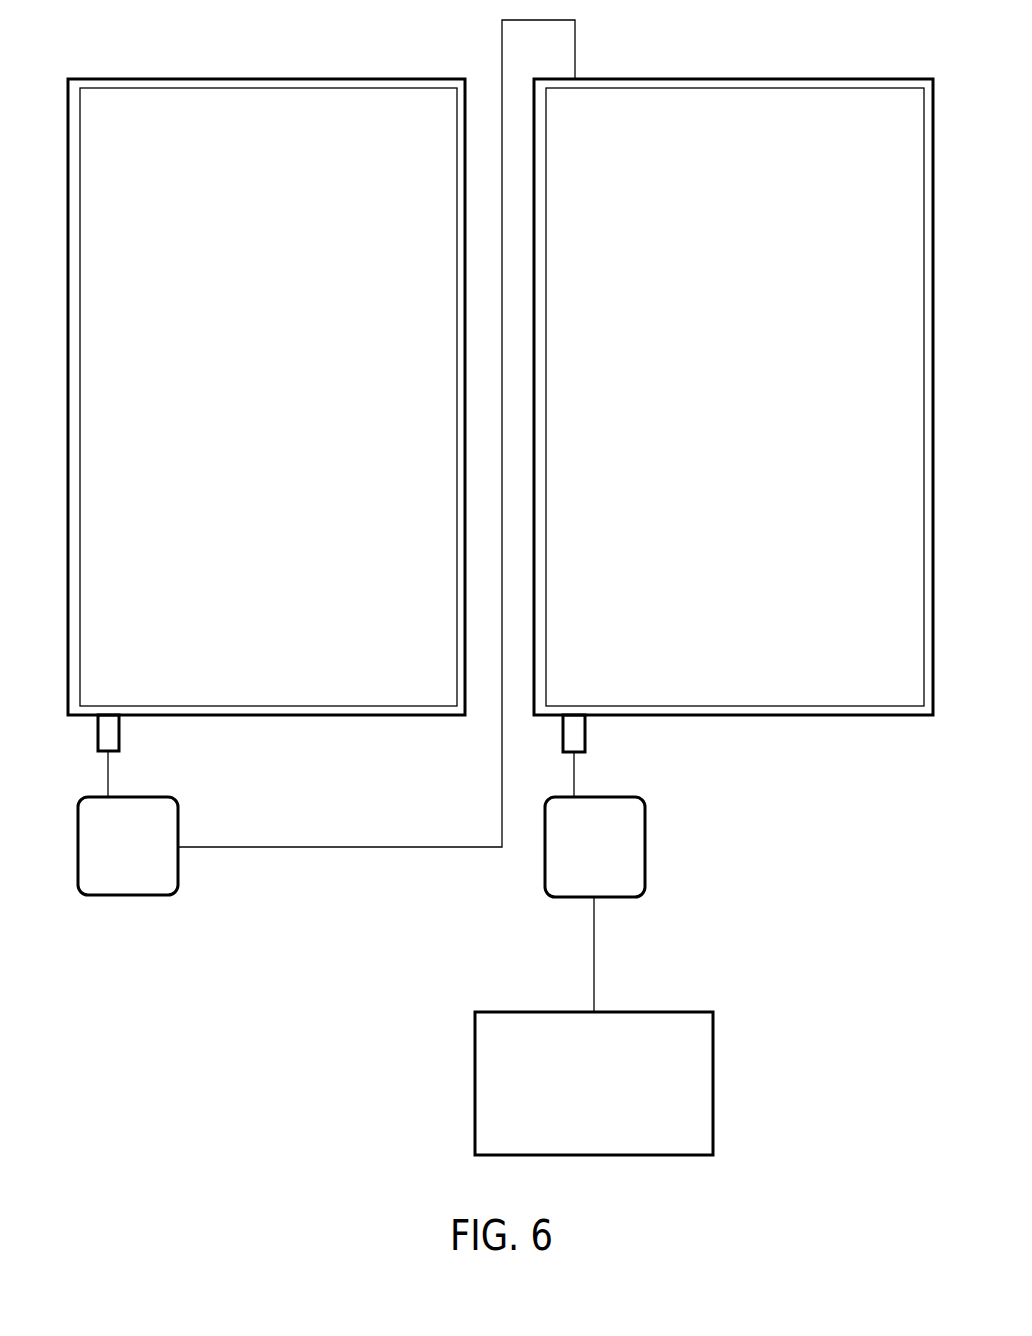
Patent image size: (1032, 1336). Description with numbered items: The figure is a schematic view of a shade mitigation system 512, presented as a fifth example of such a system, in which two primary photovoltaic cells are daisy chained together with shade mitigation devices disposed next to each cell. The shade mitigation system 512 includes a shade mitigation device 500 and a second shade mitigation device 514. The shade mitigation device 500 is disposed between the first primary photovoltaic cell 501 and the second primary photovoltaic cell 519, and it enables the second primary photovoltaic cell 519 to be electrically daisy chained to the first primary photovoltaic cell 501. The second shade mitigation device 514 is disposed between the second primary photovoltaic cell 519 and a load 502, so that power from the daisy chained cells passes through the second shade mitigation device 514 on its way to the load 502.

The shade mitigation system 512 is at (104, 965).
The first primary photovoltaic cell 501 is at (392, 79).
The second primary photovoltaic cell 519 is at (858, 79).
The shade mitigation device 500 is at (56, 823).
The second shade mitigation device 514 is at (669, 823).
The load 502 is at (706, 1040).